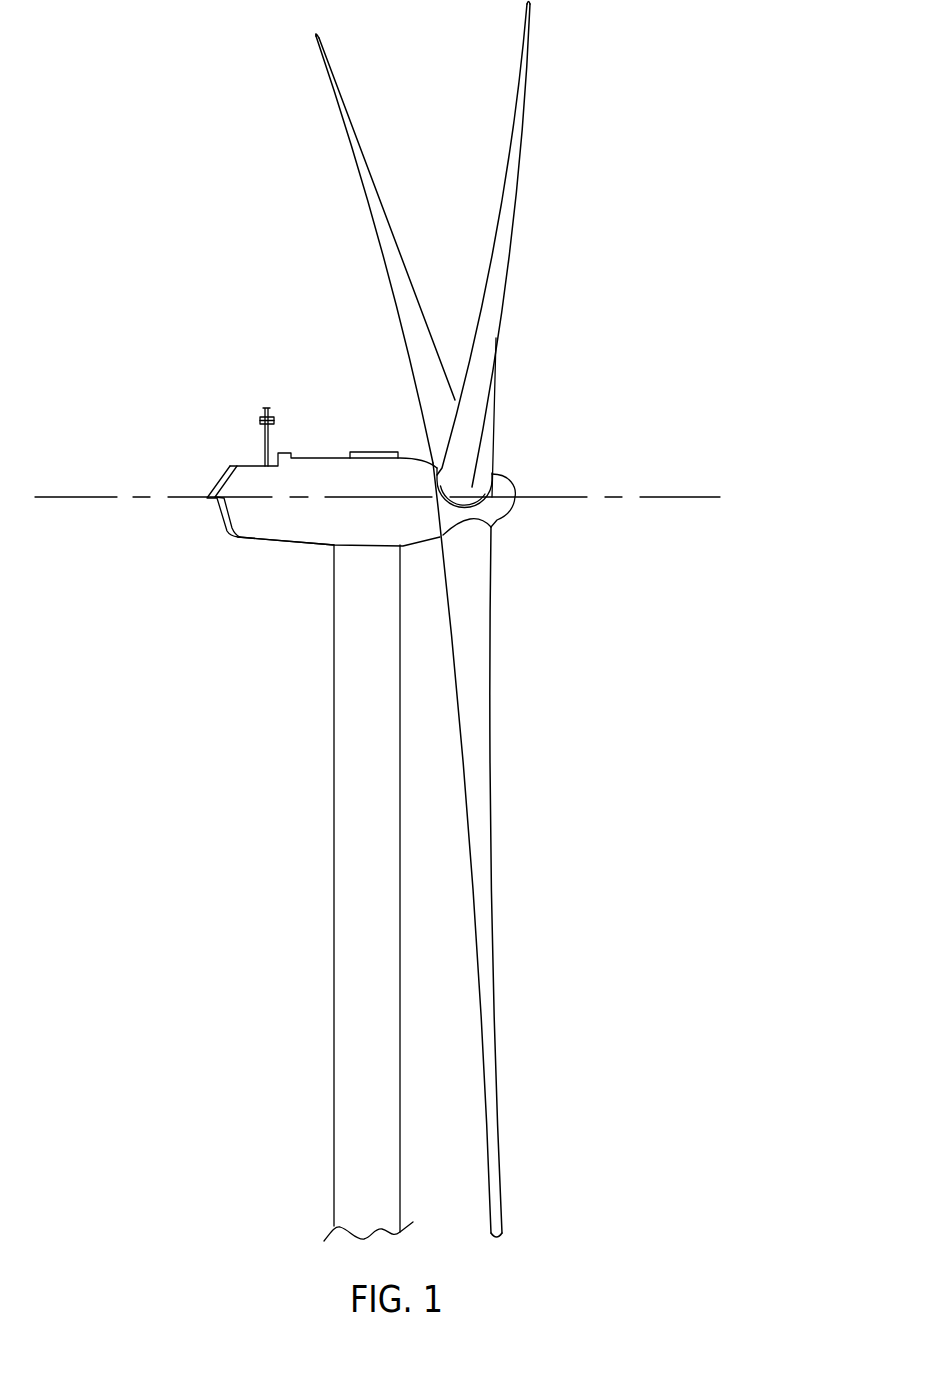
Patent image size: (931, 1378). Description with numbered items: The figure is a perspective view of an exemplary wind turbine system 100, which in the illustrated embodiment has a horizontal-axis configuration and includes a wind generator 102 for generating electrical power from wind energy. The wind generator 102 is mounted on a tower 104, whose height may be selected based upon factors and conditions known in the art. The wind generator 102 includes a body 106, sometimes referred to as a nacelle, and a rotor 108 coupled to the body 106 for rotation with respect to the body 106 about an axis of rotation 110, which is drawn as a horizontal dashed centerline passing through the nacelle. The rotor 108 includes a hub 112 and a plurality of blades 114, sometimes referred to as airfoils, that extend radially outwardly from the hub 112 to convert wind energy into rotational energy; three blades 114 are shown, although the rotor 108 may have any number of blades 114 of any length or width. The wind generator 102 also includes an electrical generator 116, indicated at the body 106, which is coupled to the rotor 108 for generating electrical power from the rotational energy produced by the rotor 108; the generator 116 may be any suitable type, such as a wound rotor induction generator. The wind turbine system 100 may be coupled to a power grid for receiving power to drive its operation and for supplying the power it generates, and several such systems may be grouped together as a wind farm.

The wind turbine system 100 is at (587, 285).
The wind generator 102 is at (310, 418).
The tower 104 is at (334, 835).
The body 106 is at (248, 462).
The rotor 108 is at (503, 478).
The axis of rotation 110 is at (663, 497).
The hub 112 is at (510, 512).
The blades 114 is at (353, 125).
The electrical generator 116 is at (282, 542).